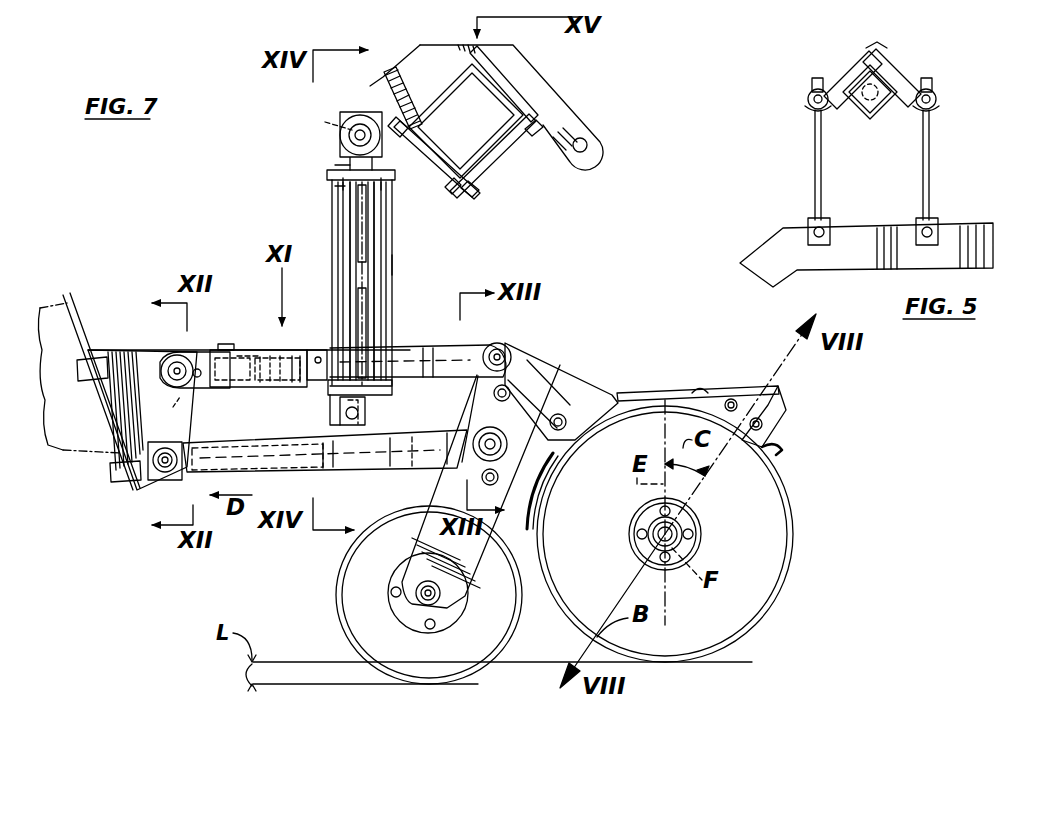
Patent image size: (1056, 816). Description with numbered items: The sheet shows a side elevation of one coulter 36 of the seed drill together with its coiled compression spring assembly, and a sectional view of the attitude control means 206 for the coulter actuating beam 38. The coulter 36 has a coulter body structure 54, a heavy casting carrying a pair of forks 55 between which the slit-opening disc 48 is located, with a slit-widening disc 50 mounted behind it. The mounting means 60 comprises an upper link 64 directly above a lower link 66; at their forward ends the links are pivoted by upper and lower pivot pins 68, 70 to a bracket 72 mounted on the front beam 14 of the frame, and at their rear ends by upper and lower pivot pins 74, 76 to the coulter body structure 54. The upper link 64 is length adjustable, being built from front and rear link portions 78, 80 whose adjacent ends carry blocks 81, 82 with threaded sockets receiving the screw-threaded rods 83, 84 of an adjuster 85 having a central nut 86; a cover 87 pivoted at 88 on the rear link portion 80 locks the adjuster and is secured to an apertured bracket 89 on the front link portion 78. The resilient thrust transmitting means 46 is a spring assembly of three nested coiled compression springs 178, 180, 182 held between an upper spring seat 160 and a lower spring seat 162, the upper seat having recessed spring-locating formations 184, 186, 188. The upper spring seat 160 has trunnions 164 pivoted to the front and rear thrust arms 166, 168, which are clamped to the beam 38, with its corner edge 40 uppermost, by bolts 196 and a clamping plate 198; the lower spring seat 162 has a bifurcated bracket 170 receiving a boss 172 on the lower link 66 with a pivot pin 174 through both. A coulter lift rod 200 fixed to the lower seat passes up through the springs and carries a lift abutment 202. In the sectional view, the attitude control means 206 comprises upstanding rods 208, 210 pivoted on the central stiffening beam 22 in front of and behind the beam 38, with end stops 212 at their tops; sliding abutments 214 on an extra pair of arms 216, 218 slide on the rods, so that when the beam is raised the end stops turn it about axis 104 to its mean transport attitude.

In FIG. 7, the front beam 14 is at (90, 318).
In FIG. 5, the central front to rear stiffening beam 22 is at (782, 228).
In FIG. 7, the coulter 36 is at (338, 596).
In FIG. 7, the coulter actuating beam 38 is at (447, 147).
In FIG. 5, the coulter actuating beam 38 is at (893, 108).
In FIG. 7, the corner edge 40 is at (480, 72).
In FIG. 7, the resilient thrust transmitting means 46 is at (397, 265).
In FIG. 7, the slit-opening disc 48 is at (340, 628).
In FIG. 7, the slit-widening disc 50 is at (773, 527).
In FIG. 7, the coulter body structure 54 is at (565, 362).
In FIG. 7, the forks 55 is at (402, 506).
In FIG. 7, the mounting means 60 is at (293, 478).
In FIG. 7, the upper link 64 is at (405, 348).
In FIG. 7, the lower link 66 is at (240, 450).
In FIG. 7, the upper pivot pin 68 is at (160, 360).
In FIG. 7, the lower pivot pin 70 is at (167, 480).
In FIG. 7, the bracket 72 is at (112, 348).
In FIG. 7, the upper pivot pin 74 is at (500, 355).
In FIG. 7, the lower pivot pin 76 is at (492, 436).
In FIG. 7, the front link portion 78 is at (207, 350).
In FIG. 7, the rear link portion 80 is at (318, 348).
In FIG. 7, the block 81 is at (215, 392).
In FIG. 7, the block 82 is at (274, 392).
In FIG. 7, the screw-threaded rod 83 is at (163, 409).
In FIG. 7, the screw-threaded rod 84 is at (300, 392).
In FIG. 7, the adjuster 85 is at (196, 368).
In FIG. 7, the central nut 86 is at (250, 392).
In FIG. 7, the cover 87 is at (242, 352).
In FIG. 7, the pivot 88 is at (304, 350).
In FIG. 7, the apertured bracket 89 is at (228, 343).
In FIG. 5, the axis 104 is at (868, 104).
In FIG. 7, the upper spring seat 160 is at (340, 155).
In FIG. 7, the lower spring seat 162 is at (388, 392).
In FIG. 7, the trunnion 164 is at (350, 136).
In FIG. 7, the front thrust arm 166 is at (373, 88).
In FIG. 7, the rear thrust arm 168 is at (547, 93).
In FIG. 7, the bifurcated bracket 170 is at (366, 412).
In FIG. 7, the boss 172 is at (257, 456).
In FIG. 7, the pivot pin 174 is at (412, 428).
In FIG. 7, the coiled compression spring 178 is at (395, 288).
In FIG. 7, the coiled compression spring 180 is at (345, 233).
In FIG. 7, the coiled compression spring 182 is at (375, 246).
In FIG. 7, the spring-locating formation 184 is at (383, 184).
In FIG. 7, the spring-locating formation 186 is at (332, 190).
In FIG. 7, the spring-locating formation 188 is at (330, 174).
In FIG. 7, the bolt 196 is at (543, 137).
In FIG. 7, the clamping plate 198 is at (478, 198).
In FIG. 7, the coulter lift rod 200 is at (362, 222).
In FIG. 7, the lift abutment 202 is at (325, 122).
In FIG. 5, the attitude control means 206 is at (920, 62).
In FIG. 5, the upstanding rod 208 is at (814, 141).
In FIG. 5, the upstanding rod 210 is at (922, 188).
In FIG. 5, the end stop 212 is at (817, 83).
In FIG. 5, the sliding abutment 214 is at (807, 108).
In FIG. 5, the arm 216 is at (847, 67).
In FIG. 5, the arm 218 is at (877, 42).